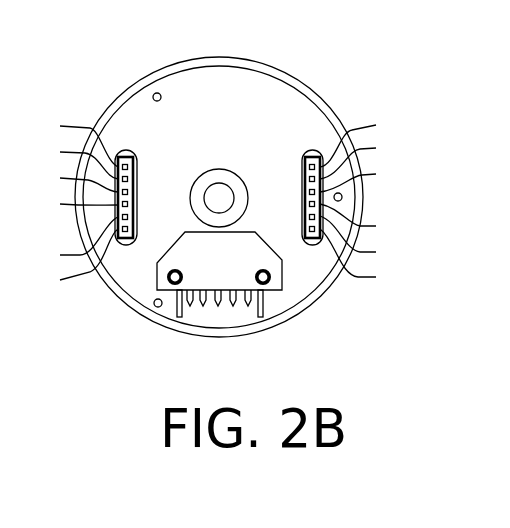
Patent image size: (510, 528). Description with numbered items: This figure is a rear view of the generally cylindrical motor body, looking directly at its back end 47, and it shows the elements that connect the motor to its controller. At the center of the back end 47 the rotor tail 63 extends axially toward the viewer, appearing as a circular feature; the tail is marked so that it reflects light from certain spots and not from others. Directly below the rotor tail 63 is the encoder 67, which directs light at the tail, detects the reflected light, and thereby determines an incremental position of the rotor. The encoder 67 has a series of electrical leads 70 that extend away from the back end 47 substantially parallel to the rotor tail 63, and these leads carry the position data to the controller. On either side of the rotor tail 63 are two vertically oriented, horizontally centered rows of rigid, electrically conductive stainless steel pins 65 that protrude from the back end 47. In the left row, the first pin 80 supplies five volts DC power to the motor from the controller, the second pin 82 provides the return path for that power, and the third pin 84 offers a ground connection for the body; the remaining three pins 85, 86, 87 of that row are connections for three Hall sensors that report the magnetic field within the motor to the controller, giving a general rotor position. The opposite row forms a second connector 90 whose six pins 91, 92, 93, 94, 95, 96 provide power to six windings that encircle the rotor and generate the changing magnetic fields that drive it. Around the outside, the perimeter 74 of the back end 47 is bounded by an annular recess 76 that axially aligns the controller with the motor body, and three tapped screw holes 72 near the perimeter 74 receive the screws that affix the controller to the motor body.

The back end 47 is at (303, 116).
The rotor tail 63 is at (215, 188).
The pins 65 is at (104, 211).
The encoder 67 is at (282, 286).
The electrical leads 70 is at (233, 304).
The tapped screw holes 72 is at (153, 95).
The perimeter 74 is at (298, 79).
The annular recess 76 is at (248, 62).
The first pin 80 is at (74, 140).
The second pin 82 is at (74, 159).
The third pin 84 is at (74, 178).
The pin 85 is at (74, 205).
The pin 86 is at (74, 242).
The pin 87 is at (74, 261).
The second connector 90 is at (312, 197).
The pin 91 is at (363, 138).
The pin 92 is at (363, 157).
The pin 93 is at (363, 176).
The pin 94 is at (363, 221).
The pin 95 is at (363, 240).
The pin 96 is at (363, 259).